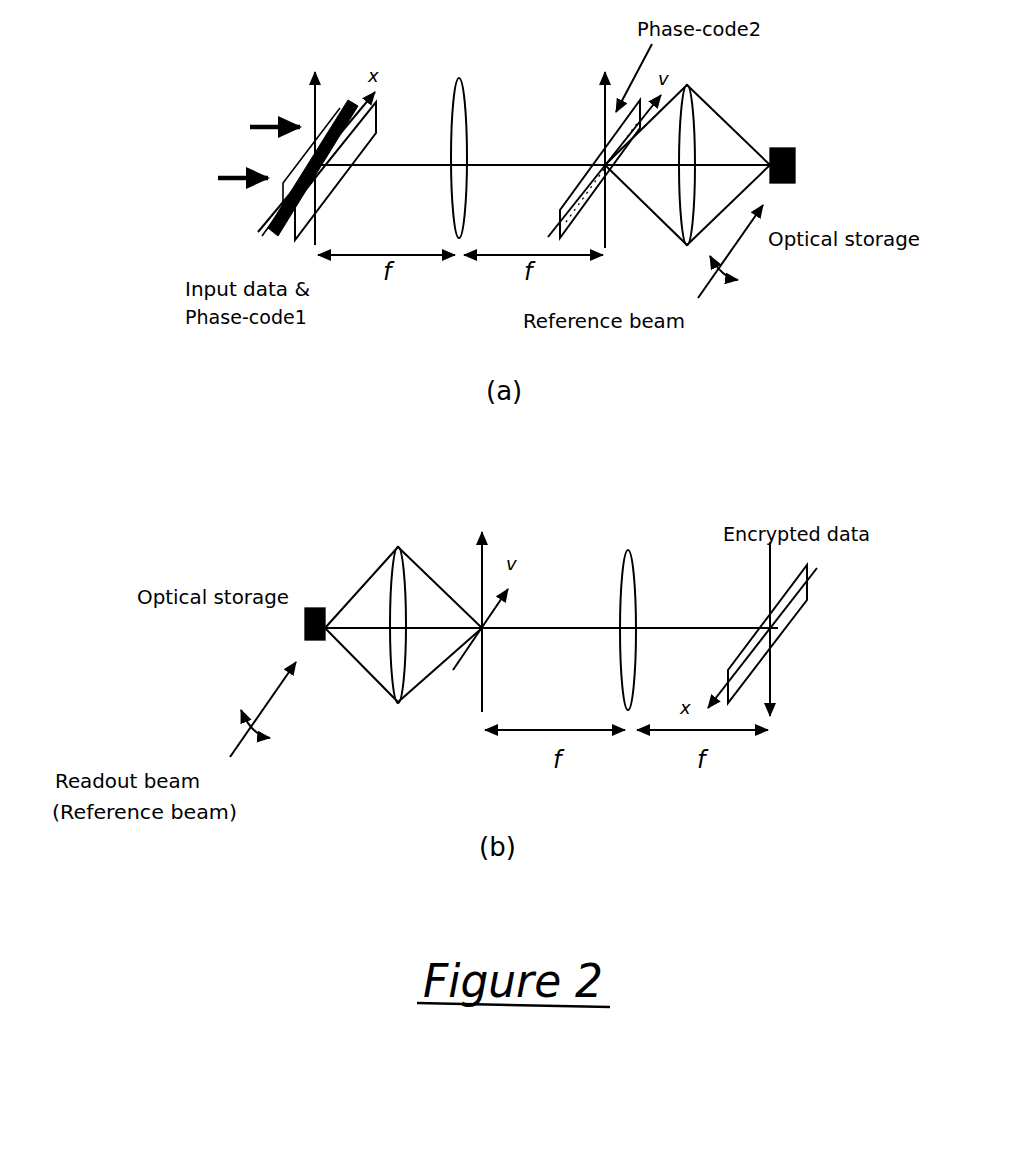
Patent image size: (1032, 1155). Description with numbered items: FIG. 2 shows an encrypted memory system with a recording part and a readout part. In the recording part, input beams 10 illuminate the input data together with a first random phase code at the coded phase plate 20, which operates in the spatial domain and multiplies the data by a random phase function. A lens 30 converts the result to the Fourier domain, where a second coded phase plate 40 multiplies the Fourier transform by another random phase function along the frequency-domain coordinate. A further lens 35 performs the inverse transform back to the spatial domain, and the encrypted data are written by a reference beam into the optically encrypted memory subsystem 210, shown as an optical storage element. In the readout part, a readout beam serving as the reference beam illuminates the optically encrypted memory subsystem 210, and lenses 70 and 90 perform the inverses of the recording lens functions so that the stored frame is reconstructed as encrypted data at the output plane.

The input beams (input data and phase-code1) 10 is at (230, 186).
The coded phase plate 20 is at (378, 106).
The lens 30 is at (462, 103).
The coded phase plate 40 is at (574, 195).
The lens 35 is at (690, 122).
The optically encrypted memory subsystem 210 is at (798, 157).
The lens 70 is at (400, 553).
The lens 90 is at (633, 572).